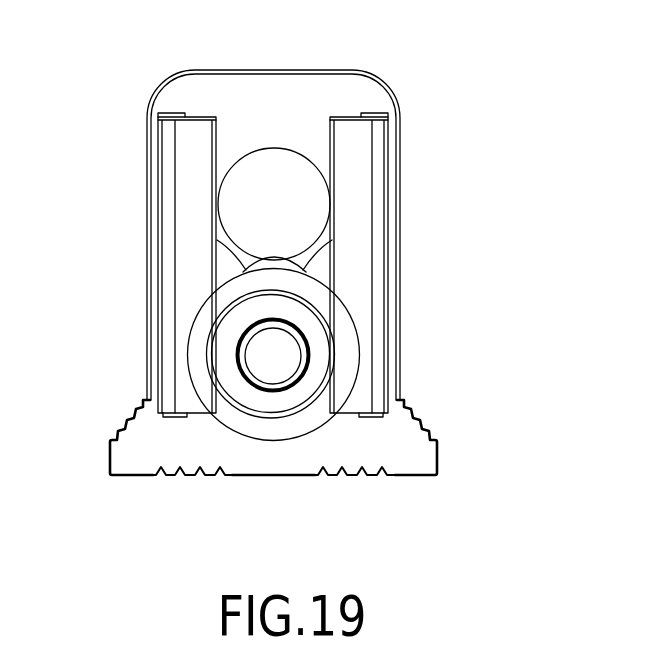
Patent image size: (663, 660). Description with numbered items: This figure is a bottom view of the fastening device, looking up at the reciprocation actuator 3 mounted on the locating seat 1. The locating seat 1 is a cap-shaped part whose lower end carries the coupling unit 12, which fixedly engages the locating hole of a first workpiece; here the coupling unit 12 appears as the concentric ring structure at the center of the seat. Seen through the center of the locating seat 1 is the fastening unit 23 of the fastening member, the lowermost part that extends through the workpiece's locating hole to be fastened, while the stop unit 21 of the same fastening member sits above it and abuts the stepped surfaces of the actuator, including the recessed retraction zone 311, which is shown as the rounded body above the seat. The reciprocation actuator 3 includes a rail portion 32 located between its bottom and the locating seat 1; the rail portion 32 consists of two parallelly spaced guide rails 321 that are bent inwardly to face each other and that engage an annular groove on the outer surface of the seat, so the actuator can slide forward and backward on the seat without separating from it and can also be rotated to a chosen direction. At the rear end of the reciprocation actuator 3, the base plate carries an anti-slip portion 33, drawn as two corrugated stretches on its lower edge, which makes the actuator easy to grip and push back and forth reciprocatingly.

The locating seat 1 is at (277, 445).
The reciprocation actuator 3 is at (140, 292).
The coupling unit 12 is at (337, 360).
The stop unit 21 is at (274, 256).
The fastening unit 23 is at (275, 353).
The rail portion 32 is at (406, 182).
The anti-slip portion 33 is at (198, 477).
The retraction zone 311 is at (278, 188).
The guide rails 321 is at (168, 172).